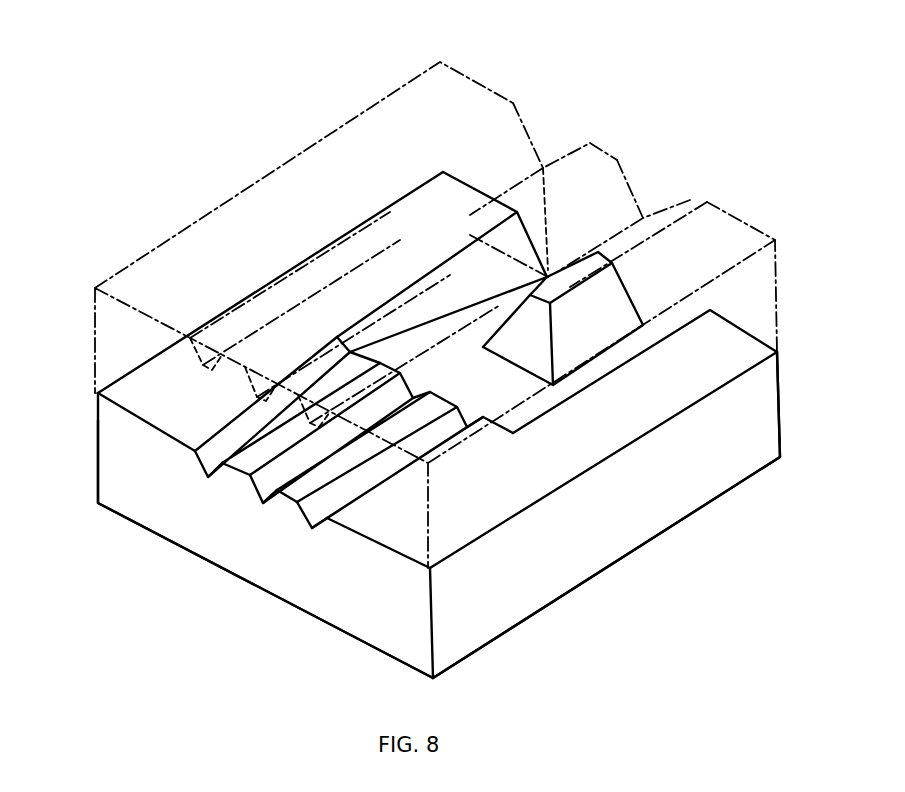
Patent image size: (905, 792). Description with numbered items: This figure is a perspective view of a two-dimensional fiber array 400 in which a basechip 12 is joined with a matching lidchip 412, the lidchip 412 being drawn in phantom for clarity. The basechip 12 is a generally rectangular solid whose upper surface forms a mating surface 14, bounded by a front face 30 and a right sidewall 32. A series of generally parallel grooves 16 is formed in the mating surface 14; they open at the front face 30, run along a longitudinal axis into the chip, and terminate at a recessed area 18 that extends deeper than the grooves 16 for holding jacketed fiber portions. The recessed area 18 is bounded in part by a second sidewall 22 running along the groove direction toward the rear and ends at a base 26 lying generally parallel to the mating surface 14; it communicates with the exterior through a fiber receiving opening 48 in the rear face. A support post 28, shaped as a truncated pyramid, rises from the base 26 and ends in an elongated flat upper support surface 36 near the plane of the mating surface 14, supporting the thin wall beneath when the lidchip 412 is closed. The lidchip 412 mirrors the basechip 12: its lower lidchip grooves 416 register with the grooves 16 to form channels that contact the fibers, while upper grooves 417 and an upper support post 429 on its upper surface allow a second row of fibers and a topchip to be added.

The basechip 12 is at (85, 452).
The mating surface 14 is at (452, 196).
The grooves 16 is at (262, 500).
The recessed area 18 is at (490, 393).
The second sidewall 22 is at (547, 275).
The base 26 is at (637, 345).
The support post 28 is at (622, 303).
The front face 30 is at (256, 572).
The right sidewall 32 is at (700, 492).
The upper support surface 36 is at (640, 220).
The fiber receiving opening 48 is at (680, 312).
The fiber array 400 is at (636, 92).
The lidchip 412 is at (363, 77).
The lower lidchip grooves 416 is at (210, 442).
The upper grooves 417 is at (306, 260).
The upper support post 429 is at (620, 172).